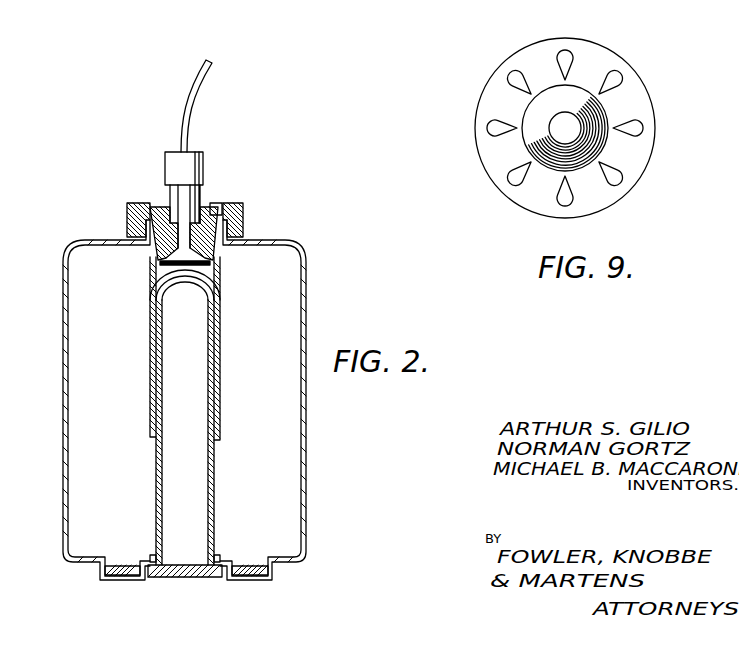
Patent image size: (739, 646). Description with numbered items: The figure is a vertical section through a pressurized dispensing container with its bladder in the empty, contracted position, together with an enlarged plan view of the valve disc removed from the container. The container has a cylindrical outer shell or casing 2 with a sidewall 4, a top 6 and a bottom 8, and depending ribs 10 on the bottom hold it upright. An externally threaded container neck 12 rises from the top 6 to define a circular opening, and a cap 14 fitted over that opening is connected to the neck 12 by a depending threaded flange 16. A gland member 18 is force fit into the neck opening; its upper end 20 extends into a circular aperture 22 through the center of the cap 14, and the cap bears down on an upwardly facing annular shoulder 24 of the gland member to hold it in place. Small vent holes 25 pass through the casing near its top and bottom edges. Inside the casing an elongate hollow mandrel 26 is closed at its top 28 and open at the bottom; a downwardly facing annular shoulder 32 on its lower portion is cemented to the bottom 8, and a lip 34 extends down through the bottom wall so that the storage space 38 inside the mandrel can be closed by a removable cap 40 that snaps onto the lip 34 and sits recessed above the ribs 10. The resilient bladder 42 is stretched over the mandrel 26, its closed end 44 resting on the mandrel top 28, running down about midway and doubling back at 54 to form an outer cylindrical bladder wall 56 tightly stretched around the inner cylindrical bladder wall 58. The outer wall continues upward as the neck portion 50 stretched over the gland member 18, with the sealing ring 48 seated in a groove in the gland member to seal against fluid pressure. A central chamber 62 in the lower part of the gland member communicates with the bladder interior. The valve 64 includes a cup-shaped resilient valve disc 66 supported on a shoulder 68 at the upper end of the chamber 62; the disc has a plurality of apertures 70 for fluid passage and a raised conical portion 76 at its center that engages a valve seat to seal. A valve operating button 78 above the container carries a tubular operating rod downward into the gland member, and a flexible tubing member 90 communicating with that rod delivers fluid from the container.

In FIG. 2, the outer shell or casing 2 is at (308, 291).
In FIG. 2, the sidewall 4 is at (306, 441).
In FIG. 2, the top 6 is at (268, 243).
In FIG. 2, the bottom 8 is at (240, 566).
In FIG. 2, the depending ribs 10 is at (246, 582).
In FIG. 2, the container neck 12 is at (128, 213).
In FIG. 2, the cap 14 is at (140, 204).
In FIG. 2, the threaded flange 16 is at (244, 213).
In FIG. 2, the gland member 18 is at (152, 256).
In FIG. 2, the upper end of gland member 20 is at (210, 205).
In FIG. 2, the circular aperture 22 is at (168, 205).
In FIG. 2, the annular shoulder 24 is at (240, 206).
In FIG. 2, the vent holes 25 is at (296, 247).
In FIG. 2, the mandrel 26 is at (209, 361).
In FIG. 2, the top of mandrel 28 is at (183, 284).
In FIG. 2, the annular shoulder 32 is at (152, 558).
In FIG. 2, the lip 34 is at (210, 565).
In FIG. 2, the storage space 38 is at (172, 460).
In FIG. 2, the removable cap 40 is at (183, 578).
In FIG. 2, the bladder 42 is at (221, 318).
In FIG. 2, the closed end of bladder 44 is at (153, 282).
In FIG. 2, the sealing ring 48 is at (240, 226).
In FIG. 2, the neck portion of bladder 50 is at (219, 283).
In FIG. 2, the doubled-back portion 54 is at (222, 436).
In FIG. 2, the outer cylindrical bladder wall 56 is at (217, 380).
In FIG. 2, the inner cylindrical bladder wall 58 is at (216, 362).
In FIG. 2, the central chamber 62 is at (210, 285).
In FIG. 2, the valve 64 is at (206, 196).
In FIG. 2, the valve disc 66 is at (160, 266).
In FIG. 9, the valve disc 66 is at (536, 50).
In FIG. 2, the shoulder 68 is at (214, 263).
In FIG. 9, the apertures 70 is at (612, 82).
In FIG. 9, the raised conical portion 76 is at (592, 110).
In FIG. 2, the valve operating button 78 is at (197, 152).
In FIG. 2, the flexible tubing member 90 is at (200, 76).